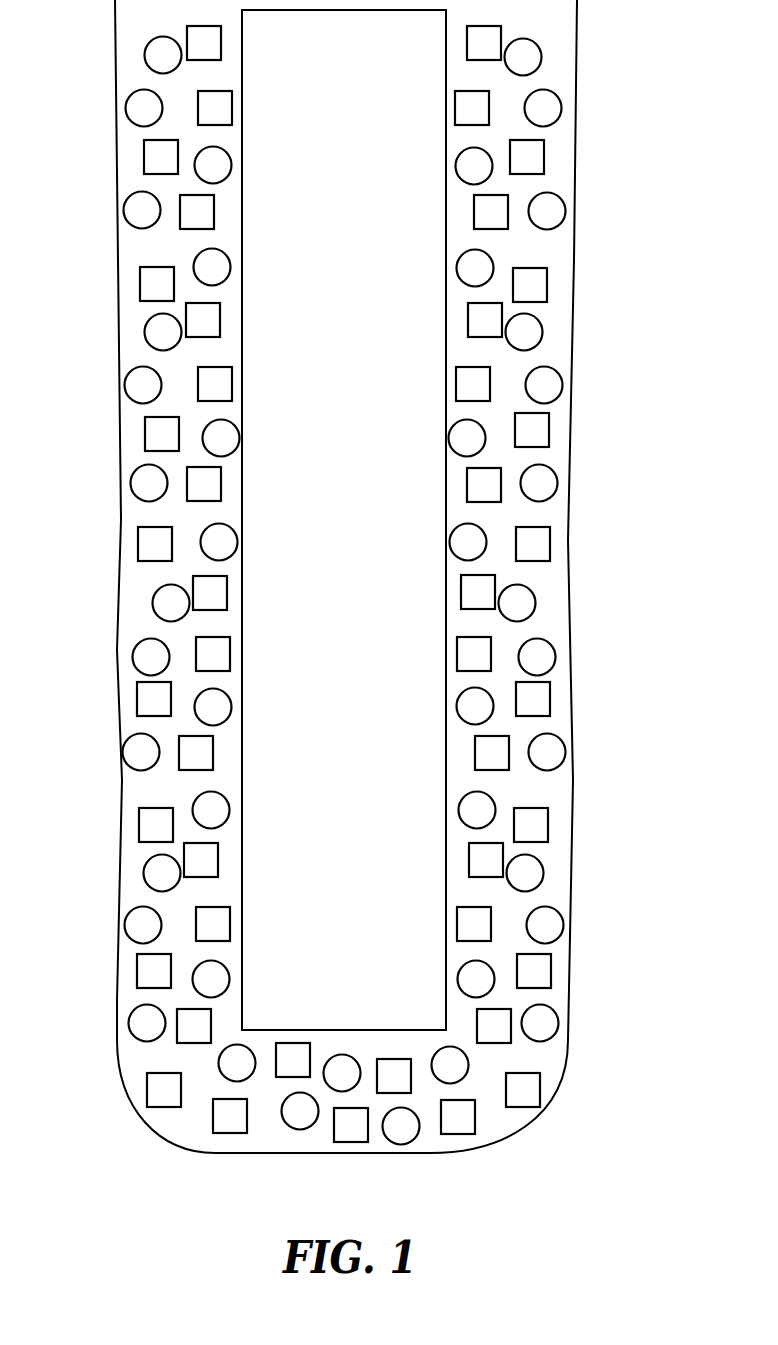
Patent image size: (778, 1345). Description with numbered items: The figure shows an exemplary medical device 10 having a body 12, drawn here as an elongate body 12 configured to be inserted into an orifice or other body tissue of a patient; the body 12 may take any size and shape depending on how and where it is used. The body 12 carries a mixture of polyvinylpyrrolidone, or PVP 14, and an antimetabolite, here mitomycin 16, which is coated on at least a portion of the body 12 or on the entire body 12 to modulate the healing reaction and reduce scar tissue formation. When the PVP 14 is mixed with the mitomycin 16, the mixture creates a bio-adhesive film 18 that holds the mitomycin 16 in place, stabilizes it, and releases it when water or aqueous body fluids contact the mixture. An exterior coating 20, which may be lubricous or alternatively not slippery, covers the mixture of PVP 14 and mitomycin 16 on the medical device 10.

The medical device 10 is at (628, 132).
The body 12 is at (240, 1031).
The polyvinylpyrrolidone (PVP) 14 is at (153, 332).
The mitomycin 16 is at (155, 283).
The bio-adhesive film 18 is at (568, 505).
The exterior coating 20 is at (573, 815).